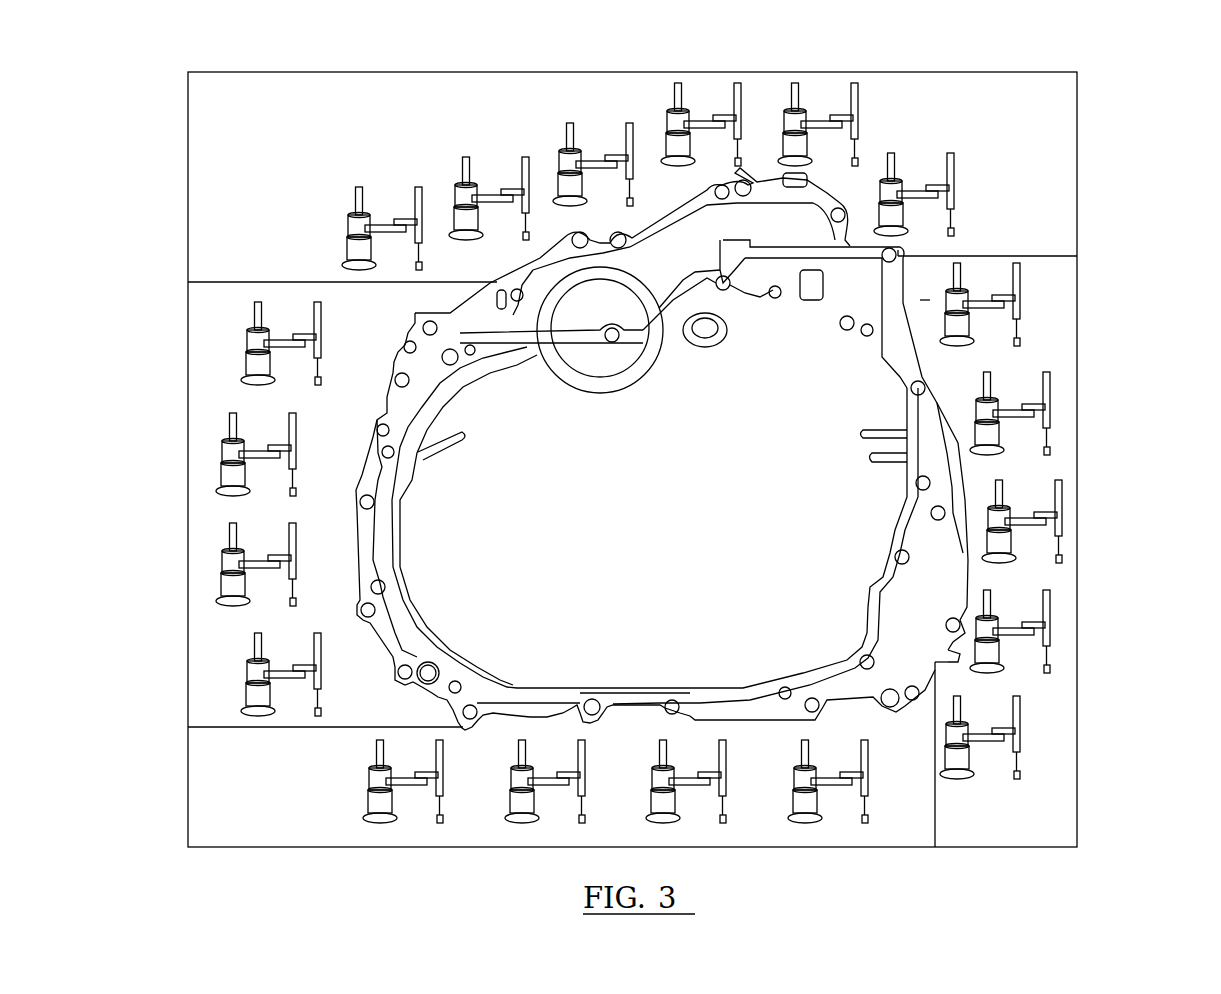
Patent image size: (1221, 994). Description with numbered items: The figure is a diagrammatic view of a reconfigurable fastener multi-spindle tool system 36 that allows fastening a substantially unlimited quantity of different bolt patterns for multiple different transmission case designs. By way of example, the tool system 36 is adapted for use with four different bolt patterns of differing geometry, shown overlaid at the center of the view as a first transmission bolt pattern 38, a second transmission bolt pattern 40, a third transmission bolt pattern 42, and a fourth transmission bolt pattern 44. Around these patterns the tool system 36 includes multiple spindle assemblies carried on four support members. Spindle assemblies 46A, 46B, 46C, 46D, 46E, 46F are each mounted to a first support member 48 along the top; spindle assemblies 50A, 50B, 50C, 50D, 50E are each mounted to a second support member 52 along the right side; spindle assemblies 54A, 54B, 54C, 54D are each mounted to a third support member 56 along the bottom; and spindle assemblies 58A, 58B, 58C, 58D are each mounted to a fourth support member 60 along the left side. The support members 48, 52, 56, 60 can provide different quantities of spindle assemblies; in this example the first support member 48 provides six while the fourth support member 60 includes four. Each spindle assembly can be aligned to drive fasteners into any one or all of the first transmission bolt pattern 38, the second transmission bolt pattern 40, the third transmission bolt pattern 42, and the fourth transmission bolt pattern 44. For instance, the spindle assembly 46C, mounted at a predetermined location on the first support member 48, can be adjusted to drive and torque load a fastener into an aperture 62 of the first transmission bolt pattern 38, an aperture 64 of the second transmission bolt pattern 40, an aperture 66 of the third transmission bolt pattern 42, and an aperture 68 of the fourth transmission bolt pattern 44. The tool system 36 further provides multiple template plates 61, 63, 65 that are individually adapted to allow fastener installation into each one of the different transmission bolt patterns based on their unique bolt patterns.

The reconfigurable fastener multi-spindle tool system 36 is at (1162, 102).
The first transmission bolt pattern 38 is at (815, 197).
The second transmission bolt pattern 40 is at (862, 228).
The third transmission bolt pattern 42 is at (728, 300).
The fourth transmission bolt pattern 44 is at (643, 270).
The spindle assembly 46A is at (283, 155).
The spindle assembly 46B is at (500, 195).
The spindle assembly 46C is at (600, 162).
The spindle assembly 46D is at (708, 122).
The spindle assembly 46E is at (826, 122).
The spindle assembly 46F is at (918, 190).
The first support member 48 is at (1062, 170).
The spindle assembly 50A is at (1020, 303).
The spindle assembly 50B is at (1050, 413).
The spindle assembly 50C is at (1065, 520).
The spindle assembly 50D is at (1050, 616).
The spindle assembly 50E is at (1020, 735).
The second support member 52 is at (1060, 288).
The spindle assembly 54A is at (413, 783).
The spindle assembly 54B is at (553, 783).
The spindle assembly 54C is at (692, 783).
The spindle assembly 54D is at (830, 783).
The third support member 56 is at (892, 817).
The spindle assembly 58A is at (247, 360).
The spindle assembly 58B is at (220, 467).
The spindle assembly 58C is at (220, 578).
The spindle assembly 58D is at (247, 688).
The fourth support member 60 is at (217, 345).
The template plate 61 is at (925, 297).
The aperture 62 is at (622, 240).
The template plate 63 is at (347, 197).
The aperture 64 is at (572, 242).
The template plate 65 is at (958, 655).
The aperture 66 is at (625, 335).
The aperture 68 is at (606, 340).